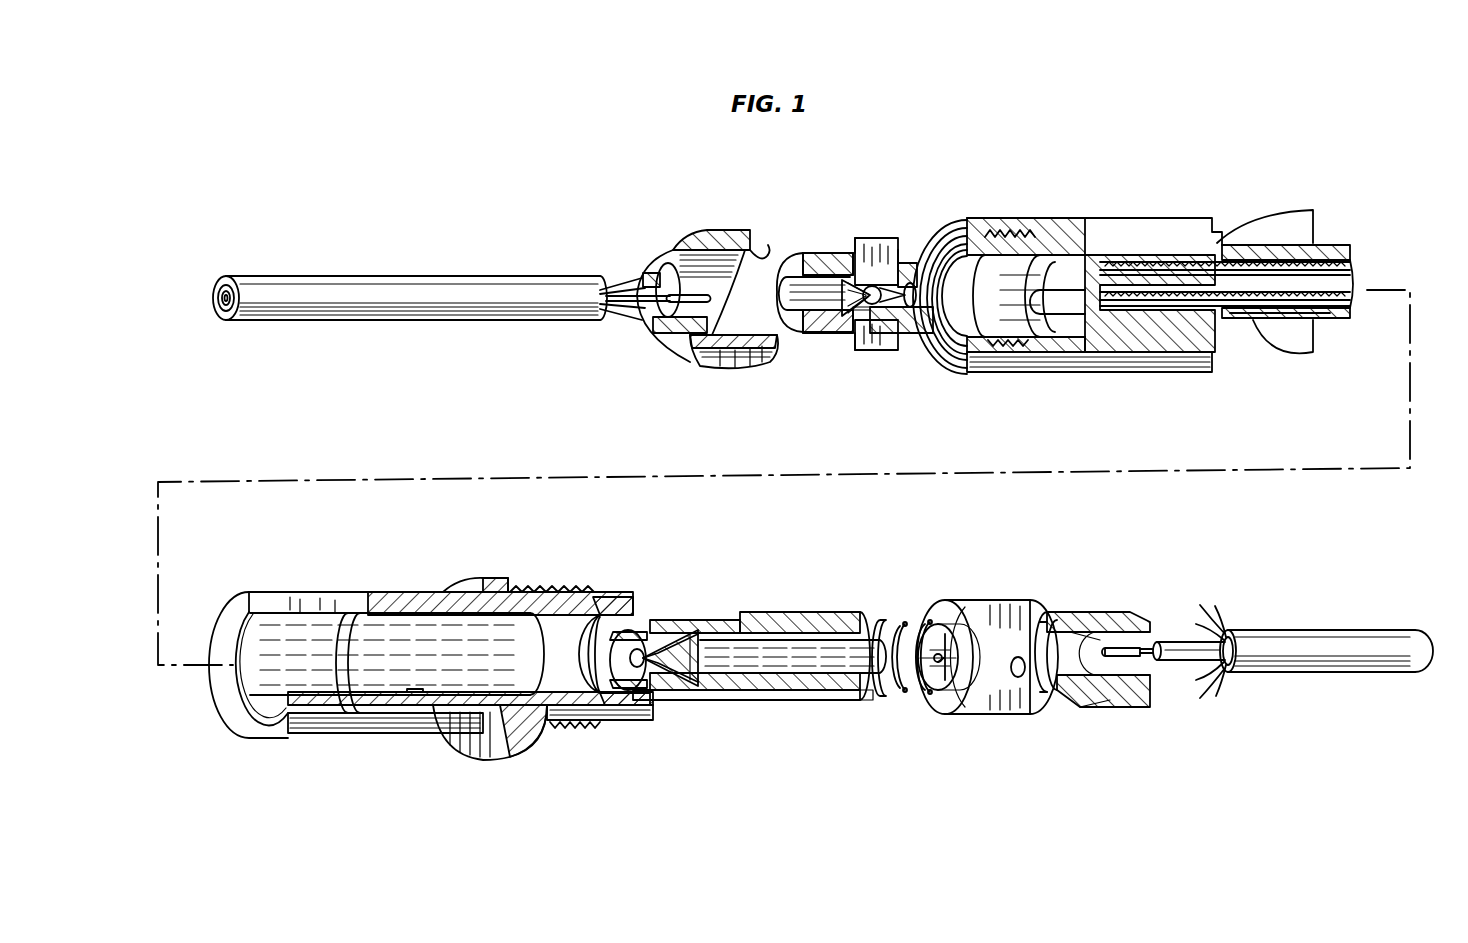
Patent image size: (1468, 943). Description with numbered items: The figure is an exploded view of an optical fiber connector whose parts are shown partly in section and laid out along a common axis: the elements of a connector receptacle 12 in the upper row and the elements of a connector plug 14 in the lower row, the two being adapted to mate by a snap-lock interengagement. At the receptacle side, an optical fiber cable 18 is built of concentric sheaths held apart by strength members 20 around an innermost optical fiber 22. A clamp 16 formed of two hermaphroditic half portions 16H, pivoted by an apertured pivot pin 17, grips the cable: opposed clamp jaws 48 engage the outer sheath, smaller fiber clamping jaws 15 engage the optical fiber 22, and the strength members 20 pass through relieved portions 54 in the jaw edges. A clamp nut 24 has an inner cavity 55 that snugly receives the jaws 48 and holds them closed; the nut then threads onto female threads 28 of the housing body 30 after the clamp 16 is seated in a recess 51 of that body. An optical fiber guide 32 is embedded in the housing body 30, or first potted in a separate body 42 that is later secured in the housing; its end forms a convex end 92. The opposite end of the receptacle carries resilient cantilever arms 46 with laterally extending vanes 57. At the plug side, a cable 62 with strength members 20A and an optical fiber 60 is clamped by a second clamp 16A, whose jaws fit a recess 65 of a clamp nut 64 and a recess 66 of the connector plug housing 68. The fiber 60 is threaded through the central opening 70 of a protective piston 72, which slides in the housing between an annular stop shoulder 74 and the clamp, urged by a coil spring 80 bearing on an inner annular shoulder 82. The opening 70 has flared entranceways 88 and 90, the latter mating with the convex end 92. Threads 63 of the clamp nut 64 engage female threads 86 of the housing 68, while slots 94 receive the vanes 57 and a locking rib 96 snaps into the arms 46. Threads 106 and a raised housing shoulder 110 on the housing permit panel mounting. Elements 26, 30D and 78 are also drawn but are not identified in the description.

The connector receptacle 12 is at (1281, 370).
The connector plug 14 is at (1056, 548).
The fiber clamping jaws 15 is at (913, 278).
The clamp 16 is at (857, 301).
The clamp 16A is at (992, 693).
The hermaphroditic half portions 16H is at (860, 238).
The apertured pivot pin 17 is at (1018, 677).
The optical fiber cable 18 is at (428, 270).
The strength members 20 is at (618, 280).
The strength members 20A is at (1220, 628).
The optical fiber 22 is at (686, 293).
The clamp nut 24 is at (713, 291).
The ferrule halves 26 is at (740, 234).
The female threads 28 is at (1001, 235).
The housing body 30 is at (1074, 257).
The coupling nut front portion 30D is at (946, 250).
The optical fiber guide 32 is at (1355, 286).
The separate body 42 is at (1176, 340).
The cantilever arms 46 is at (1314, 245).
The clamp jaws 48 is at (812, 275).
The recess 51 is at (1046, 250).
The relieved portions 54 is at (876, 350).
The inner cavity 55 is at (701, 328).
The vanes 57 is at (764, 253).
The optical fiber 60 is at (862, 305).
The cable 62 is at (1308, 628).
The threads 63 is at (1070, 610).
The clamp nut 64 is at (1116, 644).
The recess 65 is at (1068, 688).
The recess 66 is at (578, 610).
The connector plug housing 68 is at (441, 586).
The central opening 70 is at (677, 618).
The protective piston 72 is at (740, 700).
The annular stop shoulder 74 is at (383, 616).
The outer contact tube 78 is at (698, 623).
The coil spring 80 is at (886, 618).
The inner annular shoulder 82 is at (795, 700).
The female threads 86 is at (644, 650).
The flared entranceway 88 is at (684, 690).
The flared entranceway 90 is at (610, 680).
The convex end 92 is at (1338, 313).
The slots 94 is at (241, 720).
The locking rib 96 is at (351, 688).
The threads 106 is at (533, 590).
The raised housing shoulder 110 is at (488, 576).